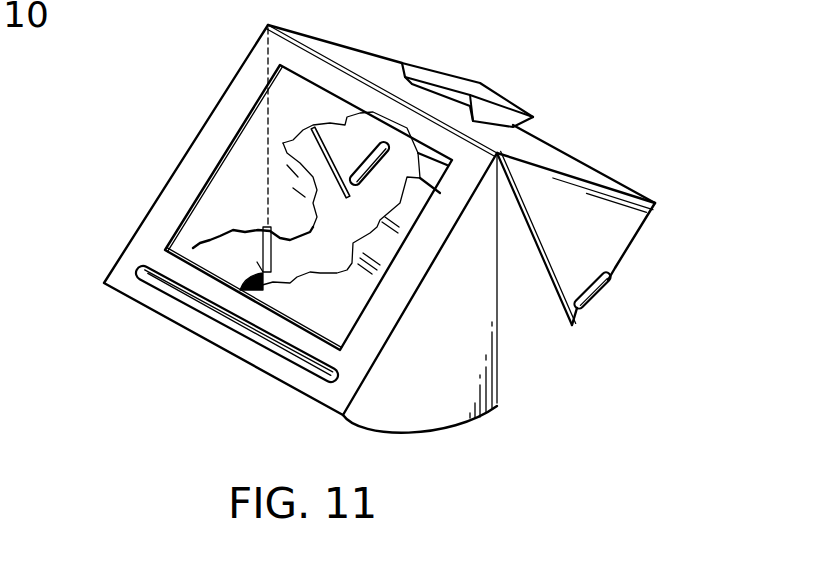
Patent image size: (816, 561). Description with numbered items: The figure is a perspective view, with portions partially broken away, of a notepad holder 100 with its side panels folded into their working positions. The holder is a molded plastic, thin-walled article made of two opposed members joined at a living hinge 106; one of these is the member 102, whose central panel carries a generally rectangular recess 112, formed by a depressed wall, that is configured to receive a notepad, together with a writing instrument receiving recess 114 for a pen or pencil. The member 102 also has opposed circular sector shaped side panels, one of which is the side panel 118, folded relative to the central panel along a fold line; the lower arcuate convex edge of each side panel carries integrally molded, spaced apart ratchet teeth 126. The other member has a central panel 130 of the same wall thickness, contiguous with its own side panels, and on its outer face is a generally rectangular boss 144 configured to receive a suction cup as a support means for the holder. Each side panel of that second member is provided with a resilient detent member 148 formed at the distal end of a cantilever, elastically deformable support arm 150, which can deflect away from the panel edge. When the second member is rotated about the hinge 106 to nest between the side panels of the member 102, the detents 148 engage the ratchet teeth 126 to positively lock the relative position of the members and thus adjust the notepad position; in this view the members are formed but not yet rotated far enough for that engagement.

The notepad holder 100 is at (143, 181).
The member 102 is at (240, 358).
The living hinge 106 is at (322, 50).
The recess 112 is at (273, 188).
The writing instrument receiving recess 114 is at (213, 315).
The side panel 118 is at (440, 407).
The ratchet teeth 126 is at (257, 260).
The central panel 130 is at (545, 152).
The boss 144 is at (495, 82).
The detent member 148 is at (612, 293).
The support arm 150 is at (590, 312).